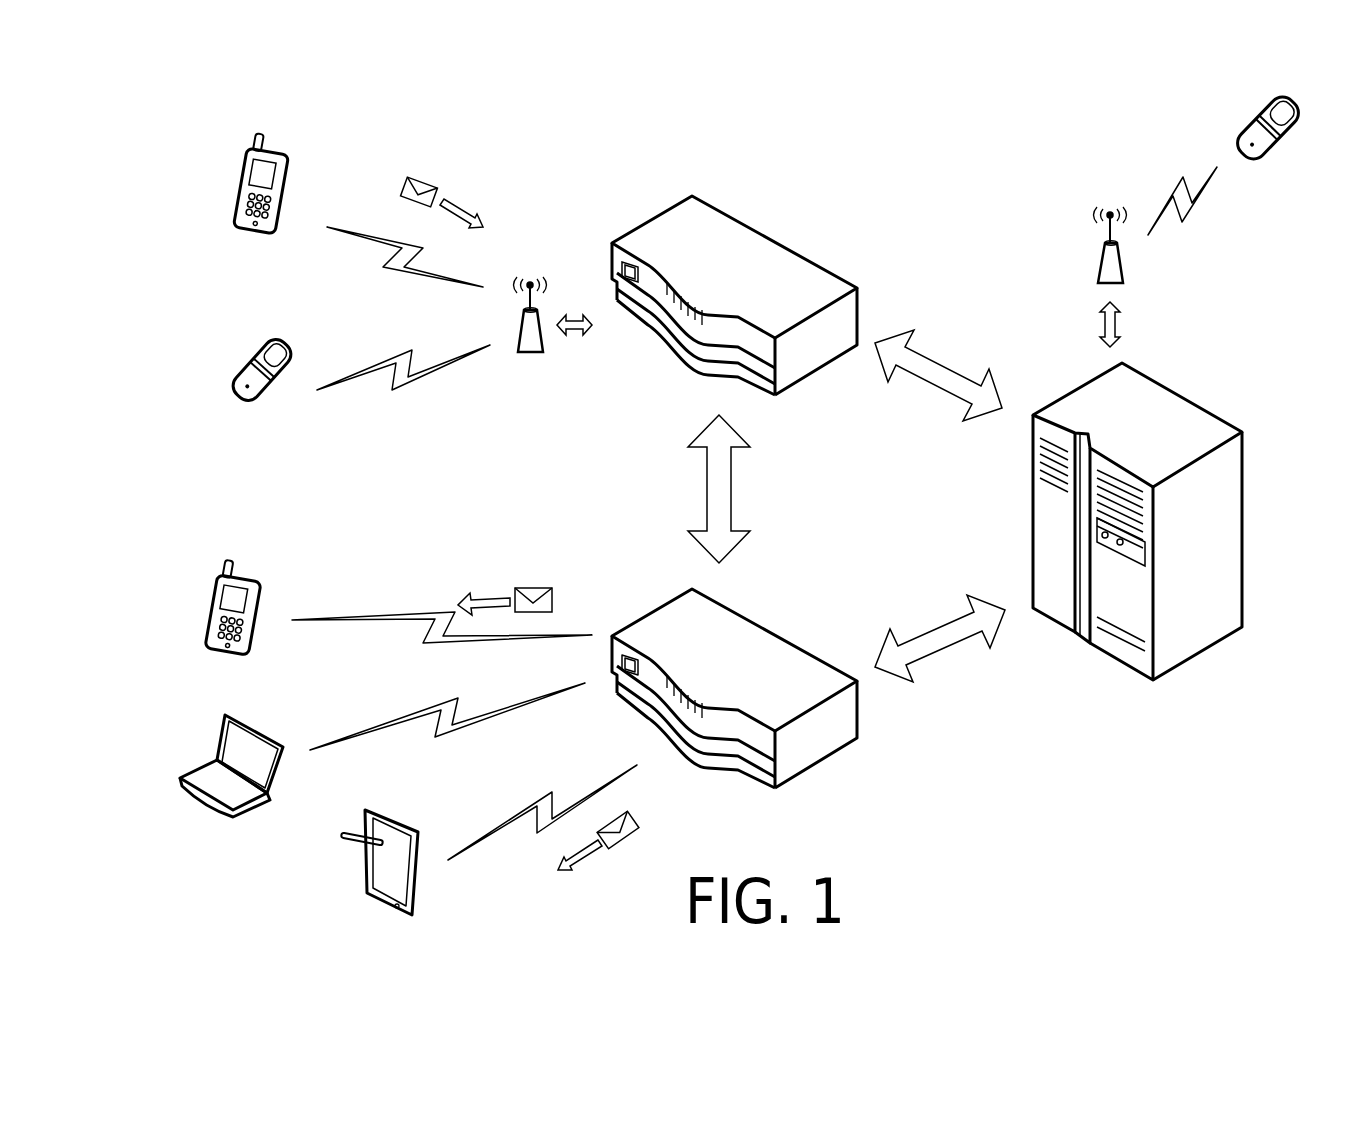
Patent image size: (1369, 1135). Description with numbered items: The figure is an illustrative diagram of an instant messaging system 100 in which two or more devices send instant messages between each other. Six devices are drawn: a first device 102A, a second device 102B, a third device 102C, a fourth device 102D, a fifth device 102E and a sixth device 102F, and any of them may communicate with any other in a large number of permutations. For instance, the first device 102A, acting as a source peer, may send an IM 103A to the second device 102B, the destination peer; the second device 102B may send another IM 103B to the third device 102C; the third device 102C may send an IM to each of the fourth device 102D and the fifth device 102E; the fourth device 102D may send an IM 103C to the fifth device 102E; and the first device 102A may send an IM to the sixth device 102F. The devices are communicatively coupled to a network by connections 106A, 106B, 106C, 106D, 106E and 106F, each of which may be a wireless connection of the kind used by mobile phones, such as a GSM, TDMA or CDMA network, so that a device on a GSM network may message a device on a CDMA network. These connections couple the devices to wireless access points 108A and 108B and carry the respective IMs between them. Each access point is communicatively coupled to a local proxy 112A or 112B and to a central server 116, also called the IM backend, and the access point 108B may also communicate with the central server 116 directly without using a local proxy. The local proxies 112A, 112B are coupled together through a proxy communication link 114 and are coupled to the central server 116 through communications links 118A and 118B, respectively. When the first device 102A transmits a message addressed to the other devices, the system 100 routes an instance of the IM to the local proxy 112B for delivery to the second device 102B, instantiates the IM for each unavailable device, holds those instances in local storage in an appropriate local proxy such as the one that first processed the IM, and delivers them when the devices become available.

The system 100 is at (1280, 878).
The first device 102A is at (237, 187).
The second device 102B is at (250, 361).
The third device 102C is at (207, 574).
The fourth device 102D is at (190, 798).
The fifth device 102E is at (424, 894).
The sixth device 102F is at (1257, 103).
The IM 103A is at (417, 170).
The IM 103B is at (524, 581).
The IM 103C is at (637, 836).
The connection 106A is at (422, 245).
The connection 106B is at (387, 394).
The connection 106C is at (415, 608).
The connection 106D is at (403, 705).
The connection 106E is at (552, 786).
The connection 106F is at (1195, 211).
The access point 108A is at (540, 358).
The access point 108B is at (1097, 260).
The local proxy 112A is at (743, 270).
The local proxy 112B is at (743, 666).
The proxy communication link 114 is at (719, 489).
The central server 116 is at (1207, 563).
The communications link 118A is at (938, 375).
The communications link 118B is at (940, 638).